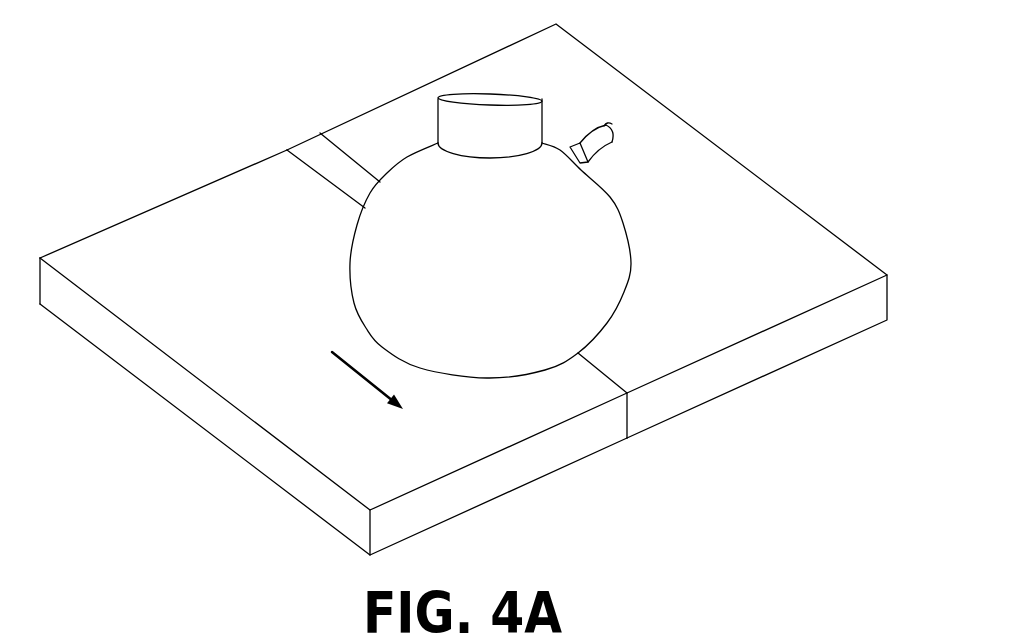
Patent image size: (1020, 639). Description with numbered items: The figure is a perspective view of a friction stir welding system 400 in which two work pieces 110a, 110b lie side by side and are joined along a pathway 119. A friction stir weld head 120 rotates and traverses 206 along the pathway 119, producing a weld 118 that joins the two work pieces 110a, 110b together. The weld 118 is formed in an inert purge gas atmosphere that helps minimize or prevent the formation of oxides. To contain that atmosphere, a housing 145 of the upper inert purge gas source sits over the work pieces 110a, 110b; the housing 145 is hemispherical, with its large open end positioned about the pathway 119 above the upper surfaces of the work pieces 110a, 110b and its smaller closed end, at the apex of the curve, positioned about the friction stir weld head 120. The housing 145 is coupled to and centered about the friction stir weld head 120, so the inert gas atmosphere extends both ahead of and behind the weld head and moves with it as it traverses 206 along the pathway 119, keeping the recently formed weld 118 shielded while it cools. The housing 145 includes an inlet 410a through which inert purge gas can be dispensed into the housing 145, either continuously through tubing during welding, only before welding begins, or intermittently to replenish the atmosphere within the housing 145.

The friction stir welding system 400 is at (789, 70).
The work piece 110a is at (118, 380).
The work piece 110b is at (821, 216).
The weld 118 is at (312, 147).
The pathway 119 is at (607, 375).
The housing 145 is at (612, 202).
The friction stir weld head 120 is at (552, 110).
The inlet 410a is at (613, 120).
The traverse 206 is at (347, 364).